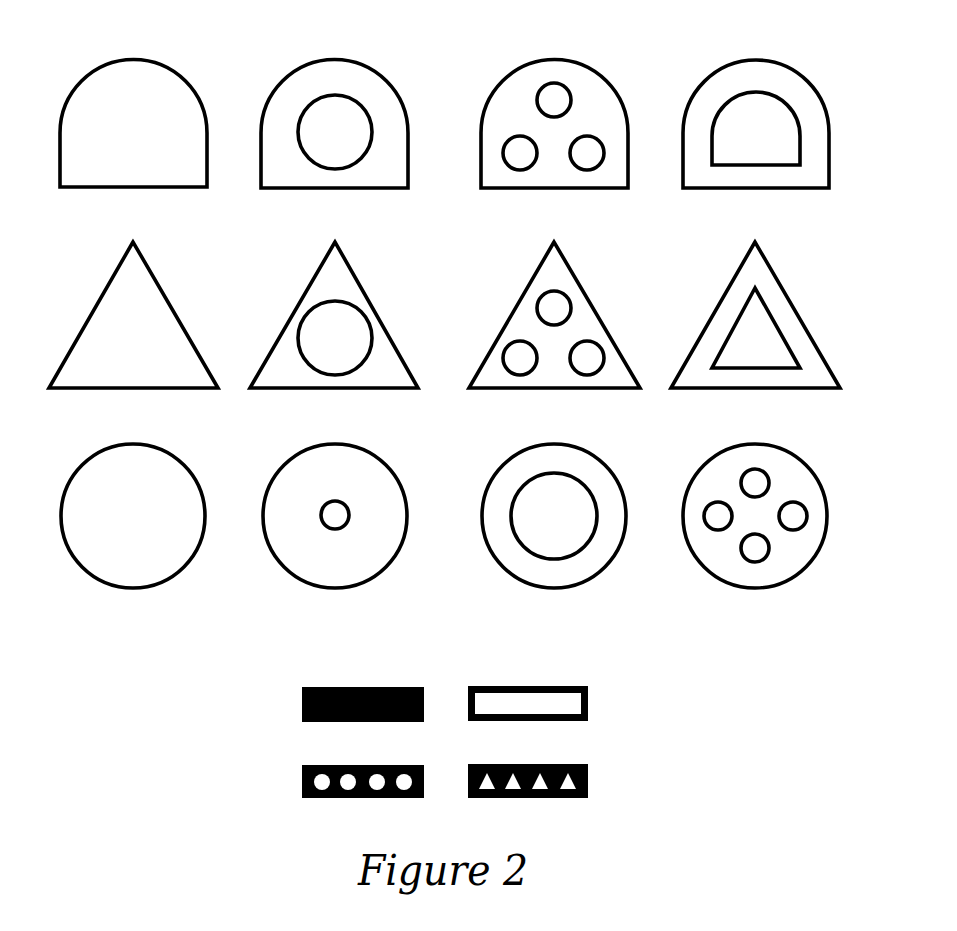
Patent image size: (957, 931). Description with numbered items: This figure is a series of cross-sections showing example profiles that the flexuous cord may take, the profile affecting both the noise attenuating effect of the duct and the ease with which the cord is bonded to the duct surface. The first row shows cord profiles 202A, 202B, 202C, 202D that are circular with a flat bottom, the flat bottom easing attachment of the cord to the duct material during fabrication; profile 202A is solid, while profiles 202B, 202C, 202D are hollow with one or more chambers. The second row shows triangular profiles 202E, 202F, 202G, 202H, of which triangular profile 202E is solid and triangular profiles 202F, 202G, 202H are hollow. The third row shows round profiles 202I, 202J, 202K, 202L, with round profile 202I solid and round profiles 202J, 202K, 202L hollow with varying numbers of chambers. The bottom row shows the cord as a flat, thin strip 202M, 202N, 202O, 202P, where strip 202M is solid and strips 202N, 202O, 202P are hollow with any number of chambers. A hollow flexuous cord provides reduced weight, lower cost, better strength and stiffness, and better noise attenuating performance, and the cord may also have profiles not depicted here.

The profile 202A is at (153, 85).
The profile 202B is at (352, 85).
The profile 202C is at (575, 85).
The profile 202D is at (788, 85).
The triangular profile 202E is at (128, 273).
The triangular profile 202F is at (333, 273).
The triangular profile 202G is at (552, 273).
The triangular profile 202H is at (755, 273).
The round profile 202I is at (163, 477).
The round profile 202J is at (368, 477).
The round profile 202K is at (593, 477).
The round profile 202L is at (790, 477).
The flat, thin strip 202M is at (302, 690).
The flat, thin strip 202N is at (588, 693).
The flat, thin strip 202O is at (302, 768).
The flat, thin strip 202P is at (588, 768).